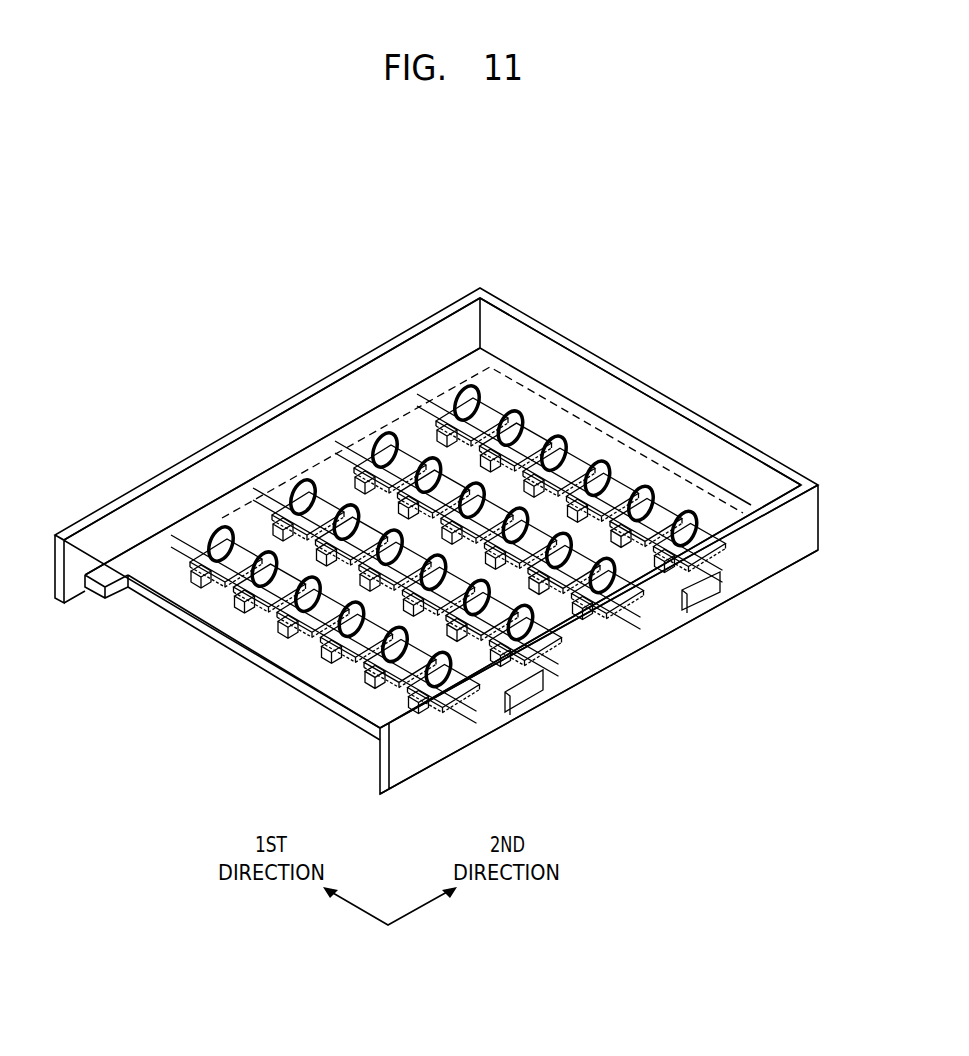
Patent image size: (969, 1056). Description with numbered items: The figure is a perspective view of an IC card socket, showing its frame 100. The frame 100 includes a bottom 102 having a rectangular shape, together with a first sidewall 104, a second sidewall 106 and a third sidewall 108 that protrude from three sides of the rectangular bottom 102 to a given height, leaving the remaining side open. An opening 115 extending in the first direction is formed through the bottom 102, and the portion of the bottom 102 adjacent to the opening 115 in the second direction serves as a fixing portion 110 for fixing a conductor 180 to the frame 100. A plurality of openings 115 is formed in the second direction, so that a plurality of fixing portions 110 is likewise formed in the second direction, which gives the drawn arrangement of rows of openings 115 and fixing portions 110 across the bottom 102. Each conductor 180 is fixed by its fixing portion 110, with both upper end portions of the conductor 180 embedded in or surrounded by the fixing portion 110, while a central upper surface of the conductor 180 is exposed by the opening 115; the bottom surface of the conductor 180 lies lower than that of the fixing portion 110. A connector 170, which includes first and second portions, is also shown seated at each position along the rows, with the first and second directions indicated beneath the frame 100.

The frame 100 is at (743, 440).
The bottom 102 is at (573, 408).
The first sidewall 104 is at (460, 330).
The second sidewall 106 is at (793, 523).
The third sidewall 108 is at (660, 427).
The fixing portion 110 is at (713, 520).
The opening 115 is at (345, 660).
The connector 170 is at (467, 390).
The conductor 180 is at (223, 596).